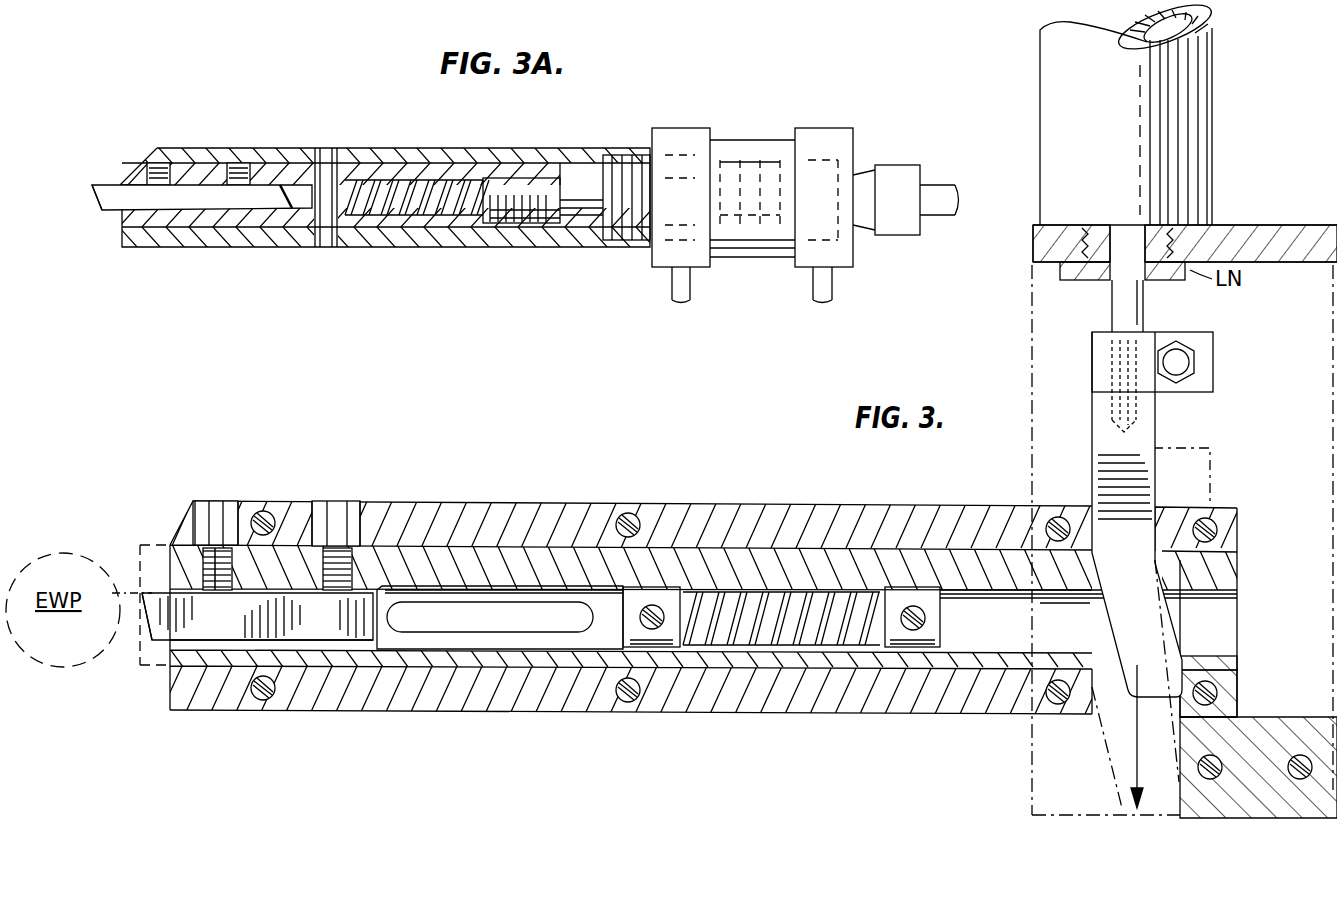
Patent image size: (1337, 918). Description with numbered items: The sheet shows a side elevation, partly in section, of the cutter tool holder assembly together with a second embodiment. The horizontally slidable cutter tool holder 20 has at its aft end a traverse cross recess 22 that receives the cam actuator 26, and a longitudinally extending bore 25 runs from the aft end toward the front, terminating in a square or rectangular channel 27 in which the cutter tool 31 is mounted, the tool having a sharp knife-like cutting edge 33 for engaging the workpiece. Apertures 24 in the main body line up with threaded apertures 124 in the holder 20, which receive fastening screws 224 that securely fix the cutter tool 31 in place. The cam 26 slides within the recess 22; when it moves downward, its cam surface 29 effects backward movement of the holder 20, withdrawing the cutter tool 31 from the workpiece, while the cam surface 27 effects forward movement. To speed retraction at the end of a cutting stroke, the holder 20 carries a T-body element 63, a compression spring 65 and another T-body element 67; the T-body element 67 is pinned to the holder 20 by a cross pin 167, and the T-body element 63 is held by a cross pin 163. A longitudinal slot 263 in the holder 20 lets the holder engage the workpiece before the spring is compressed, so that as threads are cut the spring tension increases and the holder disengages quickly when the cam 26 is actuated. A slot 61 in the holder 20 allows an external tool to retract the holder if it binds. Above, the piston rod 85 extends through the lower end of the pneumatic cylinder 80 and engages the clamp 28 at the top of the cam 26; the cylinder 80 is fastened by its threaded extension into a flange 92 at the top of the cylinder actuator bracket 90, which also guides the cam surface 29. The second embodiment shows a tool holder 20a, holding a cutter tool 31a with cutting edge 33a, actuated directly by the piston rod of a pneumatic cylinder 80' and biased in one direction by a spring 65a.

In FIG. 3, the cutter tool holder 20 is at (758, 560).
In FIG. 3, the traverse cross recess 22 is at (1230, 598).
In FIG. 3, the apertures 24 is at (205, 492).
In FIG. 3, the longitudinally extending bore 25 is at (1245, 627).
In FIG. 3, the cam actuator 26 is at (1137, 570).
In FIG. 3, the channel 27 is at (300, 645).
In FIG. 3, the clamp 28 is at (1215, 366).
In FIG. 3, the cam surface 29 is at (1190, 656).
In FIG. 3, the cutter tool 31 is at (256, 605).
In FIG. 3, the cutting edge 33 is at (148, 627).
In FIG. 3, the slot 61 is at (512, 603).
In FIG. 3, the T-body element 63 is at (650, 595).
In FIG. 3, the compression spring 65 is at (820, 600).
In FIG. 3, the T-body element 67 is at (940, 600).
In FIG. 3, the pneumatic cylinder 80 is at (1128, 112).
In FIG. 3, the piston rod 85 is at (1130, 302).
In FIG. 3, the cylinder actuator bracket 90 is at (1184, 541).
In FIG. 3, the flange 92 is at (1285, 240).
In FIG. 3, the threaded apertures 124 is at (210, 575).
In FIG. 3, the cross pin 163 is at (595, 617).
In FIG. 3, the cross pin 167 is at (915, 625).
In FIG. 3, the fastening screws 224 is at (222, 585).
In FIG. 3, the longitudinal slot 263 is at (680, 676).
In FIG. 3A, the tool holder 20a is at (400, 172).
In FIG. 3A, the cutter tool 31a is at (197, 195).
In FIG. 3A, the cutting edge 33a is at (96, 205).
In FIG. 3A, the spring 65a is at (480, 185).
In FIG. 3A, the pneumatic cylinder 80' is at (805, 188).